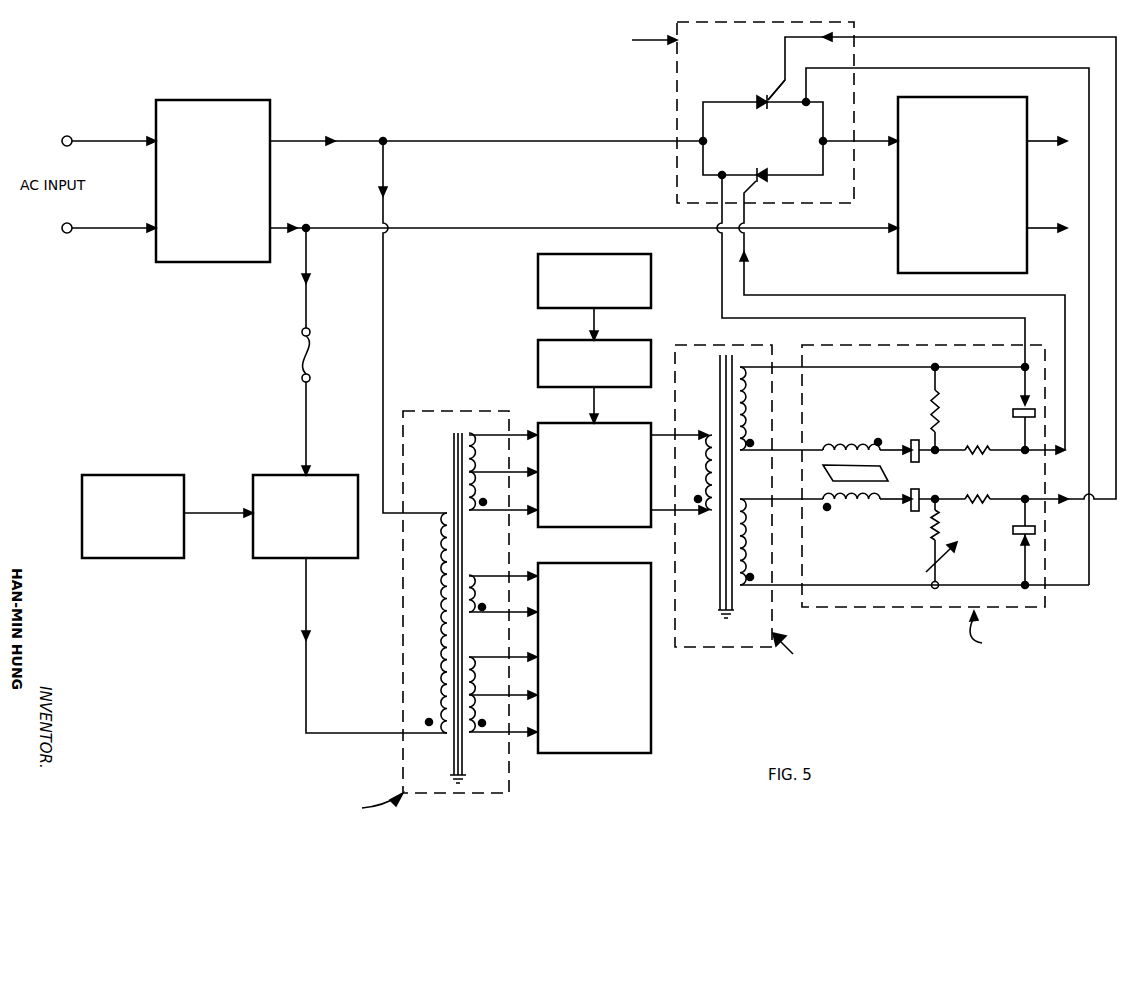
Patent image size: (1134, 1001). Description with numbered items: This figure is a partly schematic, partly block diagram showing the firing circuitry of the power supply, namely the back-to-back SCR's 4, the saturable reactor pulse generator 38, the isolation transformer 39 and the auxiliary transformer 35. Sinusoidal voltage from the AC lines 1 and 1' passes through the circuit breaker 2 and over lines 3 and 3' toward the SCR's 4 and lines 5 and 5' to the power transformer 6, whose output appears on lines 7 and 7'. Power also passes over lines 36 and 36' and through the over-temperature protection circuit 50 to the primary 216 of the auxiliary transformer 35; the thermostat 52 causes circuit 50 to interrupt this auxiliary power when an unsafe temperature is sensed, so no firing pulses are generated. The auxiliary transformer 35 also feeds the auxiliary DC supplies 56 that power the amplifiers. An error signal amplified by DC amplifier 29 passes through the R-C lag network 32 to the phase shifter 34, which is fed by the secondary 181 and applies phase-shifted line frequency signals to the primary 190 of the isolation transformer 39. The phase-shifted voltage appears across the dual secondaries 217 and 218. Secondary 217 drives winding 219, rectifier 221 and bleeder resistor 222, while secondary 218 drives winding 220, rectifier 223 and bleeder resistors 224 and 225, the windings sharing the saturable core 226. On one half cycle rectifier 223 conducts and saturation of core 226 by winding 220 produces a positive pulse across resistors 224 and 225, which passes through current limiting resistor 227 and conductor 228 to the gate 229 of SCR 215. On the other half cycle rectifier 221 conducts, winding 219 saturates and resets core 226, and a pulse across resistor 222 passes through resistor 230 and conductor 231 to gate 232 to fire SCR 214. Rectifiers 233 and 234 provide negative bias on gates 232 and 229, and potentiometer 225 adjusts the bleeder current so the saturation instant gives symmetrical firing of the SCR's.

The AC line 1 is at (109, 132).
The AC line 1' is at (109, 219).
The circuit breaker 2 is at (214, 263).
The line 3 is at (486, 133).
The line 3' is at (584, 216).
The back-to-back SCR's 4 is at (784, 297).
The line 5 is at (860, 155).
The line 5' is at (873, 216).
The power transformer 6 is at (985, 97).
The line 7 is at (1047, 130).
The line 7' is at (1047, 217).
The DC amplifier 29 is at (652, 289).
The R-C lag network 32 is at (538, 353).
The phase shifter 34 is at (627, 408).
The auxiliary transformer 35 is at (383, 601).
The line 36 is at (319, 351).
The line 36' is at (413, 327).
The saturable reactor pulse generator 38 is at (931, 362).
The isolation transformer 39 is at (752, 506).
The over-temperature protection circuit 50 is at (323, 560).
The thermostat 52 is at (186, 507).
The auxiliary DC supplies 56 is at (651, 714).
The secondary 181 is at (476, 436).
The primary 190 is at (710, 514).
The SCR 214 is at (765, 169).
The SCR 215 is at (757, 94).
The primary 216 is at (444, 599).
The secondary 217 is at (744, 380).
The secondary 218 is at (745, 566).
The winding 219 is at (853, 435).
The winding 220 is at (874, 505).
The rectifier 221 is at (913, 448).
The bleeder resistor 222 is at (931, 409).
The rectifier 223 is at (910, 496).
The bleeder resistor 224 is at (936, 516).
The potentiometer 225 is at (928, 561).
The core 226 is at (824, 471).
The resistor 227 is at (963, 499).
The conductor 228 is at (1117, 498).
The gate 229 is at (776, 84).
The resistor 230 is at (989, 453).
The conductor 231 is at (1066, 449).
The gate 232 is at (753, 179).
The rectifier 233 is at (1015, 406).
The rectifier 234 is at (1020, 544).